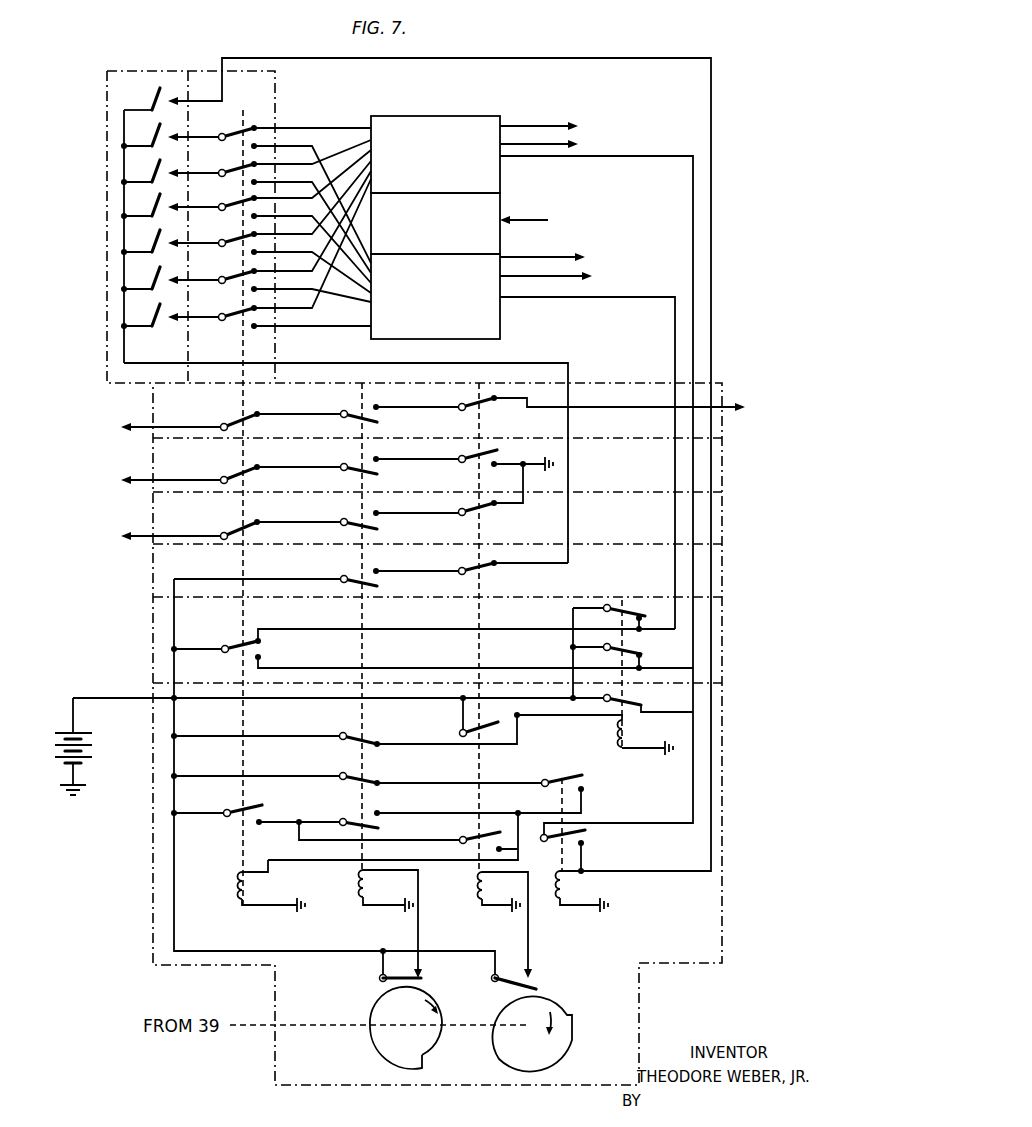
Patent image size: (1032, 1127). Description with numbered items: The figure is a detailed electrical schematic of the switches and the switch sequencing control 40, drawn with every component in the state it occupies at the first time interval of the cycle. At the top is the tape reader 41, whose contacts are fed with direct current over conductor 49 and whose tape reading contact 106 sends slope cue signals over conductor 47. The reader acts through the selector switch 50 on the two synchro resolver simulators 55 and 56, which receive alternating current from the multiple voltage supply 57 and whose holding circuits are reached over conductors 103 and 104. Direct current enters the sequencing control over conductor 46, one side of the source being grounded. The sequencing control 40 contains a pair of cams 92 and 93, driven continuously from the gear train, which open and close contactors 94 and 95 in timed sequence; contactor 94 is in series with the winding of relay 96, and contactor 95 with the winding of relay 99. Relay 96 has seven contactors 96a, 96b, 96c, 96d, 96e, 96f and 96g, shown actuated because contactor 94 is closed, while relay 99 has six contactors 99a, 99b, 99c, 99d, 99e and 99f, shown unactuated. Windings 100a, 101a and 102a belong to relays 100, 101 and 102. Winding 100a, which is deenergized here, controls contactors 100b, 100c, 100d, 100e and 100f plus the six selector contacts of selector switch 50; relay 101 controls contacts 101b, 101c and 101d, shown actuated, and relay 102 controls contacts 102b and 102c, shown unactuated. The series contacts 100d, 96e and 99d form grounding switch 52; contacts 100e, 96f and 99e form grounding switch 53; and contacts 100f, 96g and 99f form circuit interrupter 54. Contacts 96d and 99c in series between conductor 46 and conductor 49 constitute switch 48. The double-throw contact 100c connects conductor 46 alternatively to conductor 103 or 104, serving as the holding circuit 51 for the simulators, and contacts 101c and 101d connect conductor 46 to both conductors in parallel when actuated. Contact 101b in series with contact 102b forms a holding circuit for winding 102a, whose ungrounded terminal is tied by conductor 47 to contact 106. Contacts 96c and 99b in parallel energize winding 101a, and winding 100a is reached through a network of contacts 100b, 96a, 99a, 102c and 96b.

The tape reader 41 is at (165, 70).
The selector switch 50 is at (245, 70).
The tape reading contact 106 is at (152, 100).
The synchro resolver simulator 55 is at (452, 116).
The multiple voltage supply 57 is at (505, 213).
The synchro resolver simulator 56 is at (503, 323).
The conductor 103 is at (603, 158).
The conductor 104 is at (600, 299).
The conductor 49 is at (553, 363).
The circuit interrupter 54 is at (152, 416).
The grounding switch 53 is at (152, 470).
The grounding switch 52 is at (152, 522).
The switch 48 is at (152, 584).
The holding circuit 51 is at (152, 640).
The conductor 46 is at (112, 699).
The switch sequencing control 40 is at (130, 797).
The conductor 47 is at (724, 744).
The relay 96 is at (348, 904).
The contactor 96a is at (356, 818).
The contactor 96b is at (370, 776).
The contactor 96c is at (366, 736).
The contactor 96d is at (349, 574).
The contactor 96e is at (355, 515).
The contactor 96f is at (361, 460).
The contactor 96g is at (369, 408).
The relay 99 is at (475, 897).
The contactor 99a is at (462, 840).
The contactor 99b is at (452, 740).
The contactor 99c is at (473, 572).
The contactor 99d is at (486, 511).
The contactor 99e is at (481, 457).
The contactor 99f is at (472, 402).
The relay 100 is at (233, 893).
The winding 100a is at (250, 892).
The contactor 100b is at (251, 806).
The contactor 100c is at (266, 650).
The contactor 100d is at (255, 536).
The contactor 100e is at (255, 481).
The contactor 100f is at (255, 428).
The relay 101 is at (614, 738).
The winding 101a is at (629, 735).
The contact 101b is at (636, 695).
The contact 101c is at (636, 650).
The contact 101d is at (629, 606).
The relay 102 is at (580, 908).
The winding 102a is at (572, 889).
The contact 102b is at (588, 835).
The contact 102c is at (571, 776).
The contactor 94 is at (395, 970).
The contactor 95 is at (532, 979).
The cam 92 is at (443, 1043).
The cam 93 is at (563, 1048).